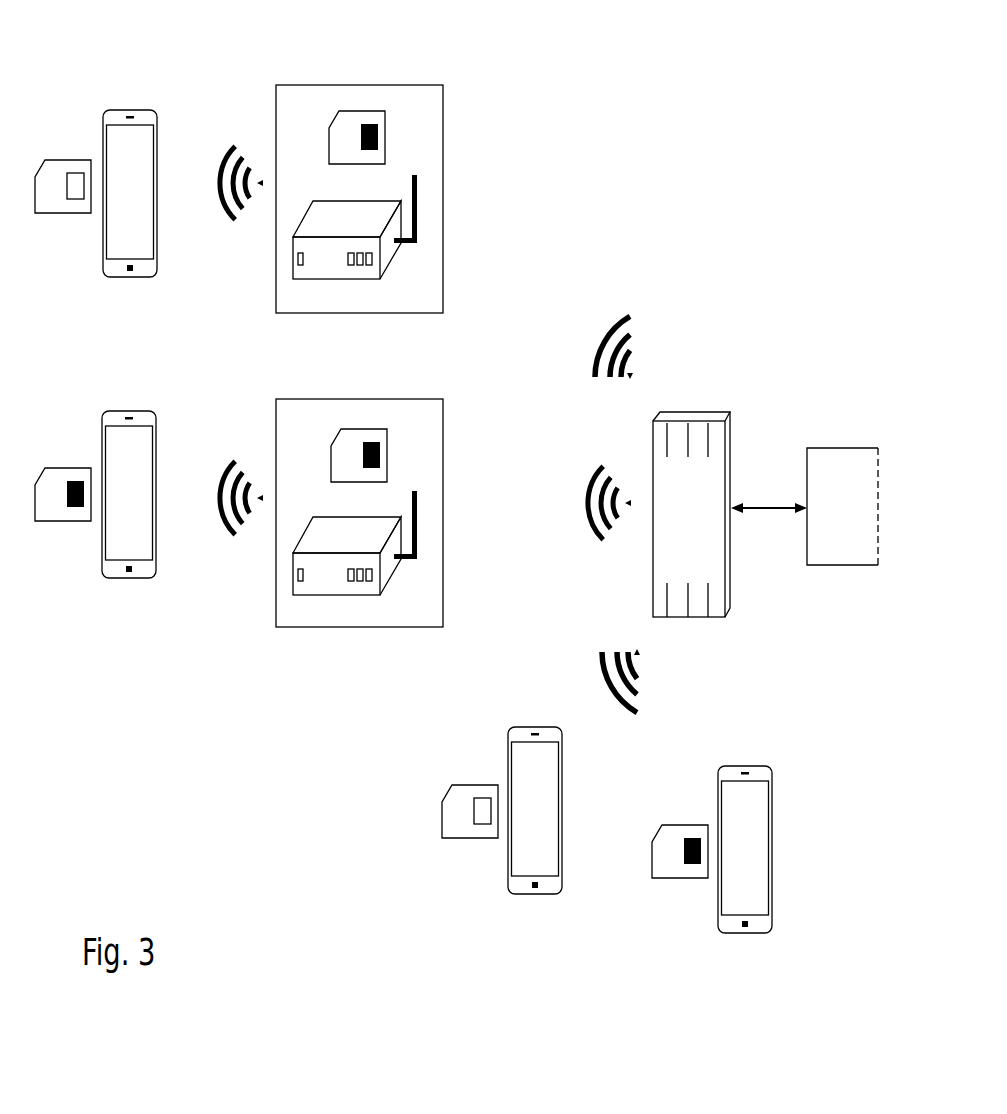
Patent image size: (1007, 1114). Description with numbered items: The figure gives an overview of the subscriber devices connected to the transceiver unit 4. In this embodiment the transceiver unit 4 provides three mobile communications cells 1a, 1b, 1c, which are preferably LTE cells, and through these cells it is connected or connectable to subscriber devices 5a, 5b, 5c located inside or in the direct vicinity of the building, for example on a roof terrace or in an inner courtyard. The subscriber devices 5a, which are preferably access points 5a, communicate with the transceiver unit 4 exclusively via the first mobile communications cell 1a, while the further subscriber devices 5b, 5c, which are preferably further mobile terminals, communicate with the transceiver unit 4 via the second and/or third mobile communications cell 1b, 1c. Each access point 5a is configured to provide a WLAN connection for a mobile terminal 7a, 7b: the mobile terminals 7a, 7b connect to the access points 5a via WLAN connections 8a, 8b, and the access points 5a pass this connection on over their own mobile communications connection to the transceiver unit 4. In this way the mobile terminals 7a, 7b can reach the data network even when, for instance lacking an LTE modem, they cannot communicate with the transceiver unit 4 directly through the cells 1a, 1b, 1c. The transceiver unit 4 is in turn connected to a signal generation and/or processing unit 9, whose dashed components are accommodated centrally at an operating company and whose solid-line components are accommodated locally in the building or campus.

The first mobile communications cell 1a is at (632, 313).
The second mobile communications cell 1b is at (597, 468).
The third mobile communications cell 1c is at (615, 653).
The transceiver unit 4 is at (715, 412).
The access point 5a is at (443, 130).
The further mobile terminal 5b is at (490, 760).
The further mobile terminal 5c is at (700, 797).
The mobile terminal 7a is at (82, 117).
The mobile terminal 7b is at (82, 443).
The WLAN connection 8a is at (230, 143).
The WLAN connection 8b is at (230, 460).
The signal generation and/or processing unit 9 is at (837, 448).